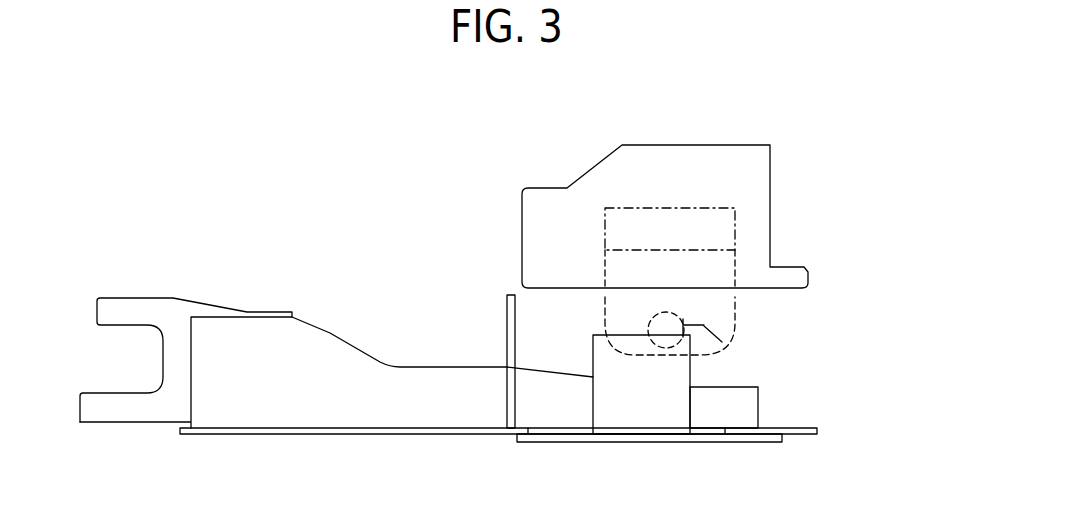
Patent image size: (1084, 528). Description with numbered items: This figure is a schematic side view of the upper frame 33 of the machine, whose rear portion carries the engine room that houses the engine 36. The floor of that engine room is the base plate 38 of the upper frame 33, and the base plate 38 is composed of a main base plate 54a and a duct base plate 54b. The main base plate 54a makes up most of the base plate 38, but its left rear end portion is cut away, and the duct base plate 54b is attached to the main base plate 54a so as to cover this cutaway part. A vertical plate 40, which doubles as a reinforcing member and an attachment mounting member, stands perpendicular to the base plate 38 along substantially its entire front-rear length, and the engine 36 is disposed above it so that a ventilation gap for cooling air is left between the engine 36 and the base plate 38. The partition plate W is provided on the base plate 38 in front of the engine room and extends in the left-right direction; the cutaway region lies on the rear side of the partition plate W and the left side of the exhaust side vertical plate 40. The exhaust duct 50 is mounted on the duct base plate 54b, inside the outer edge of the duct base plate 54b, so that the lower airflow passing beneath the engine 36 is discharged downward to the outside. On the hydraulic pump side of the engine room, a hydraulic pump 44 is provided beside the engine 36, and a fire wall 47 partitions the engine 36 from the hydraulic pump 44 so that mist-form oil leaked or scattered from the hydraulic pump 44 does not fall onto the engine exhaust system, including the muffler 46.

The fire wall 47 is at (593, 167).
The muffler 46 is at (682, 208).
The engine 36 is at (735, 305).
The hydraulic pump 44 is at (723, 340).
The upper frame 33 is at (351, 336).
The partition plate W is at (507, 322).
The exhaust duct 50 is at (587, 398).
The vertical plate 40 is at (750, 407).
The base plate 38 is at (498, 465).
The main base plate 54a is at (395, 435).
The duct base plate 54b is at (640, 442).